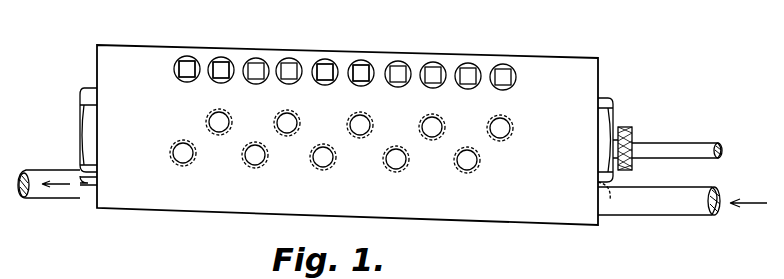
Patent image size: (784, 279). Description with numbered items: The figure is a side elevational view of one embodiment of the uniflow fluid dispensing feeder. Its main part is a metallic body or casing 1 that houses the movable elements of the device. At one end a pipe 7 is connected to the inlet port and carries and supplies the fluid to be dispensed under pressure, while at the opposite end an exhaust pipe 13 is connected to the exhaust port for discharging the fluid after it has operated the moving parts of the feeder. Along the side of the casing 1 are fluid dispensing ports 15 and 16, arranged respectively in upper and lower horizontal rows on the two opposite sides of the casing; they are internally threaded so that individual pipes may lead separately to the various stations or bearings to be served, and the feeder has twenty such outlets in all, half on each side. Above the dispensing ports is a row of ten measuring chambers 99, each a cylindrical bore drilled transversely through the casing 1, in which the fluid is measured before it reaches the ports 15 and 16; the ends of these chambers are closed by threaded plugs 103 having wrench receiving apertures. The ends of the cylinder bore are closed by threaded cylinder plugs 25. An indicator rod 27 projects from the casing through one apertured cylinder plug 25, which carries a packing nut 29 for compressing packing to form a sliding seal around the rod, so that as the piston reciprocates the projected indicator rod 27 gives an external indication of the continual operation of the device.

The casing 1 is at (118, 52).
The pipe 7 is at (666, 212).
The exhaust pipe 13 is at (46, 170).
The fluid dispensing port 15 is at (284, 118).
The fluid dispensing port 16 is at (248, 161).
The cylinder plug 25 is at (80, 102).
The indicator rod 27 is at (682, 152).
The packing nut 29 is at (633, 134).
The measuring chamber 99 is at (181, 57).
The plug 103 is at (216, 62).